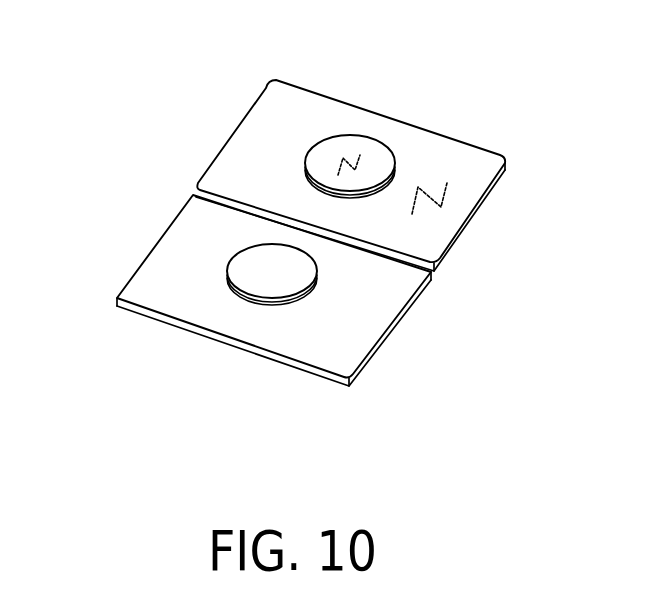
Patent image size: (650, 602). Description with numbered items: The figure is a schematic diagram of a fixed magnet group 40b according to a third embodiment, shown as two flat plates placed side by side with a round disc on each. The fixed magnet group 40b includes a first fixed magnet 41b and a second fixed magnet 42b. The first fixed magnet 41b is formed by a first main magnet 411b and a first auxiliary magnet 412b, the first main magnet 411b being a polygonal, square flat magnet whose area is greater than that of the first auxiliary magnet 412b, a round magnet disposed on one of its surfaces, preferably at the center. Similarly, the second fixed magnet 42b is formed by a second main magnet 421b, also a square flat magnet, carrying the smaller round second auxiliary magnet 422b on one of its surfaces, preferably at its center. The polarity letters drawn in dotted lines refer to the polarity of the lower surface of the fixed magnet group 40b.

The fixed magnet group 40b is at (142, 98).
The second fixed magnet 42b is at (232, 127).
The second auxiliary magnet 422b is at (352, 150).
The second main magnet 421b is at (434, 167).
The first fixed magnet 41b is at (165, 228).
The first main magnet 411b is at (158, 283).
The first auxiliary magnet 412b is at (263, 302).